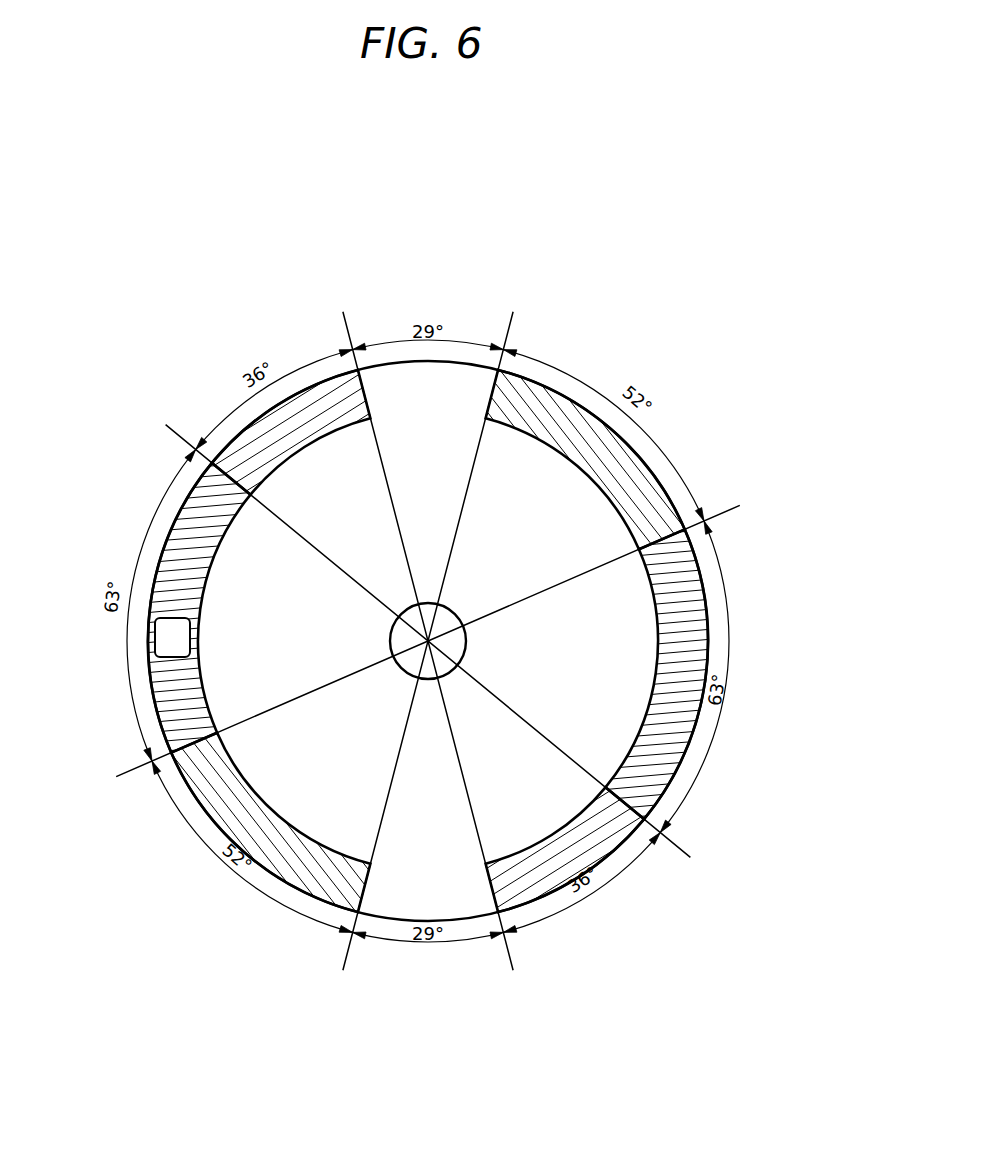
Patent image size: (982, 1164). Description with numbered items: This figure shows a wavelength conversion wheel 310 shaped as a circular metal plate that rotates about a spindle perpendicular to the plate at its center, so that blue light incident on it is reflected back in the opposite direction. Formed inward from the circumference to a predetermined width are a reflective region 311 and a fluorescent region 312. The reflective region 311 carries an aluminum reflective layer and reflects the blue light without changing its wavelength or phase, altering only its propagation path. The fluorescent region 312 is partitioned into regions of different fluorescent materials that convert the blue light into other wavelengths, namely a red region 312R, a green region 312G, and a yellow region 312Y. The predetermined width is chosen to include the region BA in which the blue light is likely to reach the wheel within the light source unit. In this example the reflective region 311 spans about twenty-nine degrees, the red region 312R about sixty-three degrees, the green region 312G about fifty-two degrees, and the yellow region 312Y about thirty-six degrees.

The wavelength conversion wheel 310 is at (153, 311).
The reflective region 311 is at (453, 387).
The fluorescent region 312 is at (830, 437).
The yellow region 312Y is at (318, 407).
The red region 312R is at (193, 540).
The green region 312G is at (648, 492).
The region in which the blue light has the likelihood of reaching the wavelength con BA is at (165, 638).